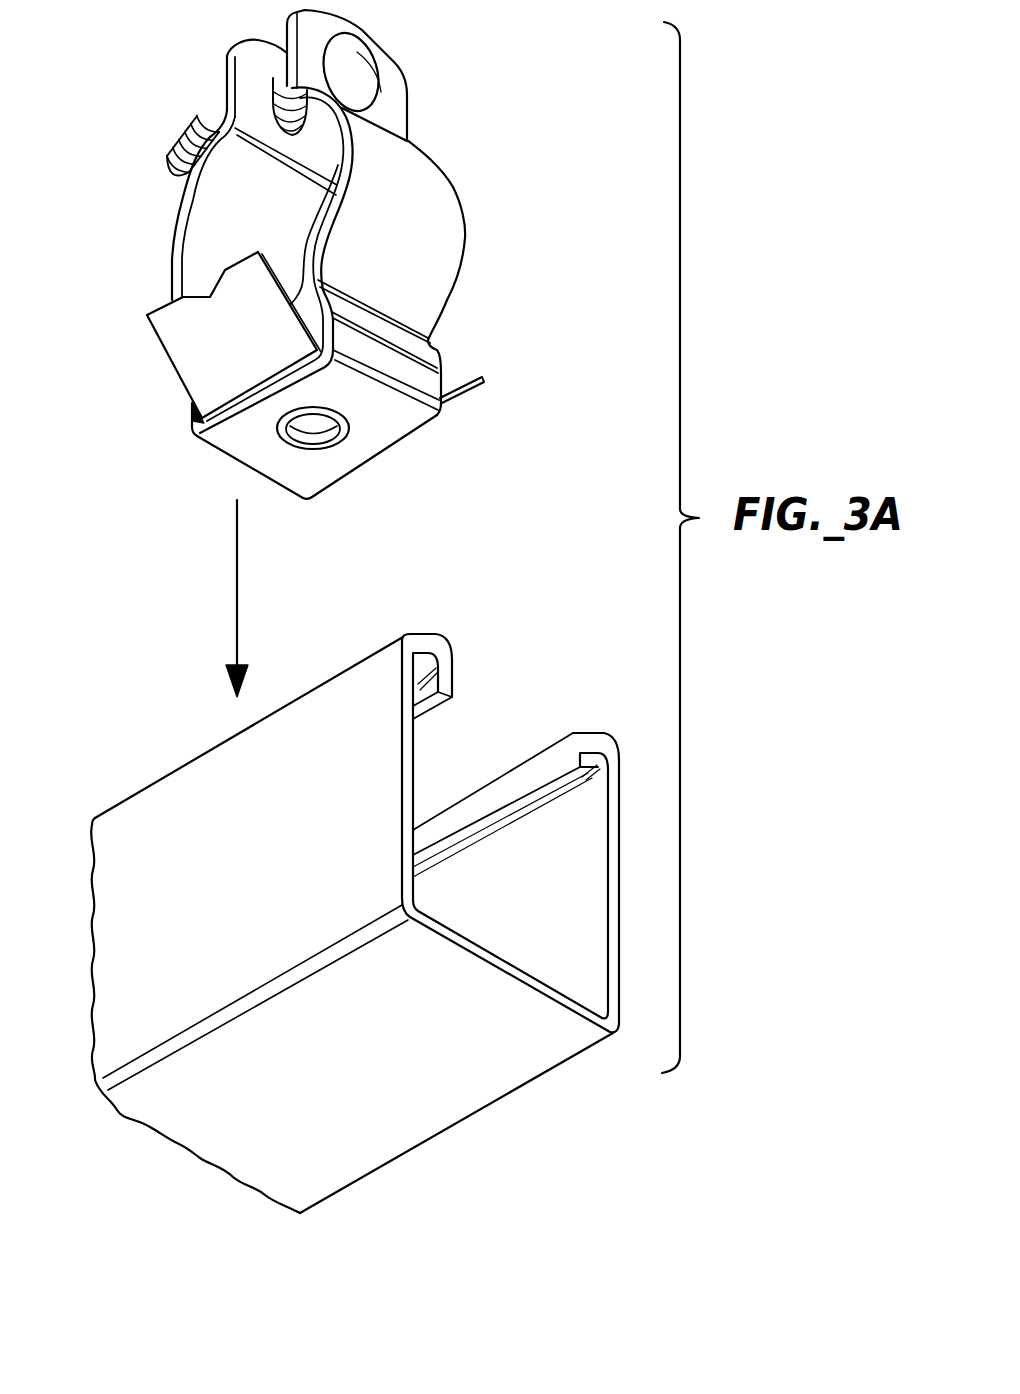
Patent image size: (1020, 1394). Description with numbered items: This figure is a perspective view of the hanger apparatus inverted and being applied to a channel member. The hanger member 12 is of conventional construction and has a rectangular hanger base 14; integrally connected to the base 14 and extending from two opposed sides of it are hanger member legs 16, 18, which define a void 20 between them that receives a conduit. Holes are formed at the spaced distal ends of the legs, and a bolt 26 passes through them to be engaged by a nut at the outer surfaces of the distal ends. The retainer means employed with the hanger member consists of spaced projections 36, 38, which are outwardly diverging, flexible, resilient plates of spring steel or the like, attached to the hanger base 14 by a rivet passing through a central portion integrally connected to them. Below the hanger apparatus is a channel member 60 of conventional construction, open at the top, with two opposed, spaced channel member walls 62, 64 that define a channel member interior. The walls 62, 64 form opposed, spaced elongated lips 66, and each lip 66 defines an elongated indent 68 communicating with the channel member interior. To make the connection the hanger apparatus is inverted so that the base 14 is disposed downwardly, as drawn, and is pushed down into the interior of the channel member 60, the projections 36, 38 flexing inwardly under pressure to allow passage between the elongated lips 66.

The hanger member 12 is at (447, 238).
The hanger base 14 is at (333, 460).
The hanger member leg 16 is at (238, 95).
The hanger member leg 18 is at (393, 118).
The void 20 is at (207, 222).
The bolt 26 is at (183, 152).
The projection 36 is at (483, 378).
The projection 38 is at (187, 350).
The channel member 60 is at (182, 792).
The channel member wall 62 is at (387, 672).
The channel member wall 64 is at (597, 875).
The lip 66 is at (445, 678).
The indent 68 is at (420, 687).